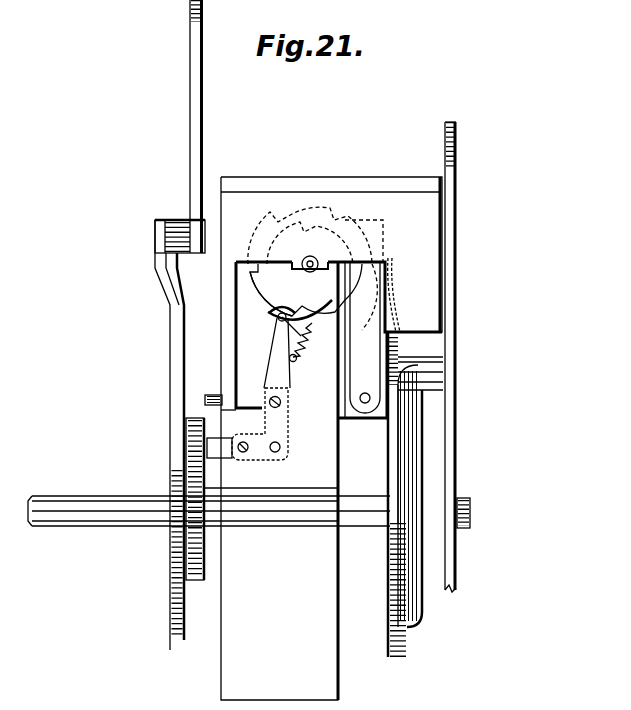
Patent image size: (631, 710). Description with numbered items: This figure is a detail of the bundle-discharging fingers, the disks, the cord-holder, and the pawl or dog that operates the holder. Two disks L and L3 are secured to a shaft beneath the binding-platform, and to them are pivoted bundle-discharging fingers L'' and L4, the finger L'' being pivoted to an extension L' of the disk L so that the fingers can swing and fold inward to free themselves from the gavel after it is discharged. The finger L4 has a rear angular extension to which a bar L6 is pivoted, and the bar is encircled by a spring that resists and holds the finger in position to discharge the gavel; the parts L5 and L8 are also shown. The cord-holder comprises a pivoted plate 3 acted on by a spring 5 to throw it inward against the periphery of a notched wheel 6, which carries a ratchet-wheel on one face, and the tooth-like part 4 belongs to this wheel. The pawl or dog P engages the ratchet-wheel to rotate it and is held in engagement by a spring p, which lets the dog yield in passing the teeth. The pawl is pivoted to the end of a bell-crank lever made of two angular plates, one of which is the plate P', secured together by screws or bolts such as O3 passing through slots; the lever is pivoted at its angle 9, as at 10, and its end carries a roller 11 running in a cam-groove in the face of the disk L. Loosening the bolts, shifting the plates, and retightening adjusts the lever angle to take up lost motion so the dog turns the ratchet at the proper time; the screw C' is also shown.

The bundle-discharging finger L'' is at (205, 126).
The extension of the disk L' is at (167, 236).
The disk L is at (166, 435).
The disk L3 is at (392, 565).
The bundle-discharging finger L4 is at (456, 228).
The collar L5 is at (457, 462).
The bar L6 is at (457, 556).
The shaft L8 is at (140, 497).
The pivoted plate 3 is at (365, 337).
The cam wheel 4 is at (313, 268).
The spring 5 is at (398, 292).
The notched wheel 6 is at (271, 294).
The angle of the bell-crank lever 9 is at (290, 440).
The pivot 10 is at (282, 456).
The roller 11 is at (218, 430).
The pawl or dog P is at (273, 324).
The spring p is at (303, 344).
The angular plate P' is at (276, 353).
The screw C' is at (234, 437).
The screw or bolt O3 is at (282, 403).